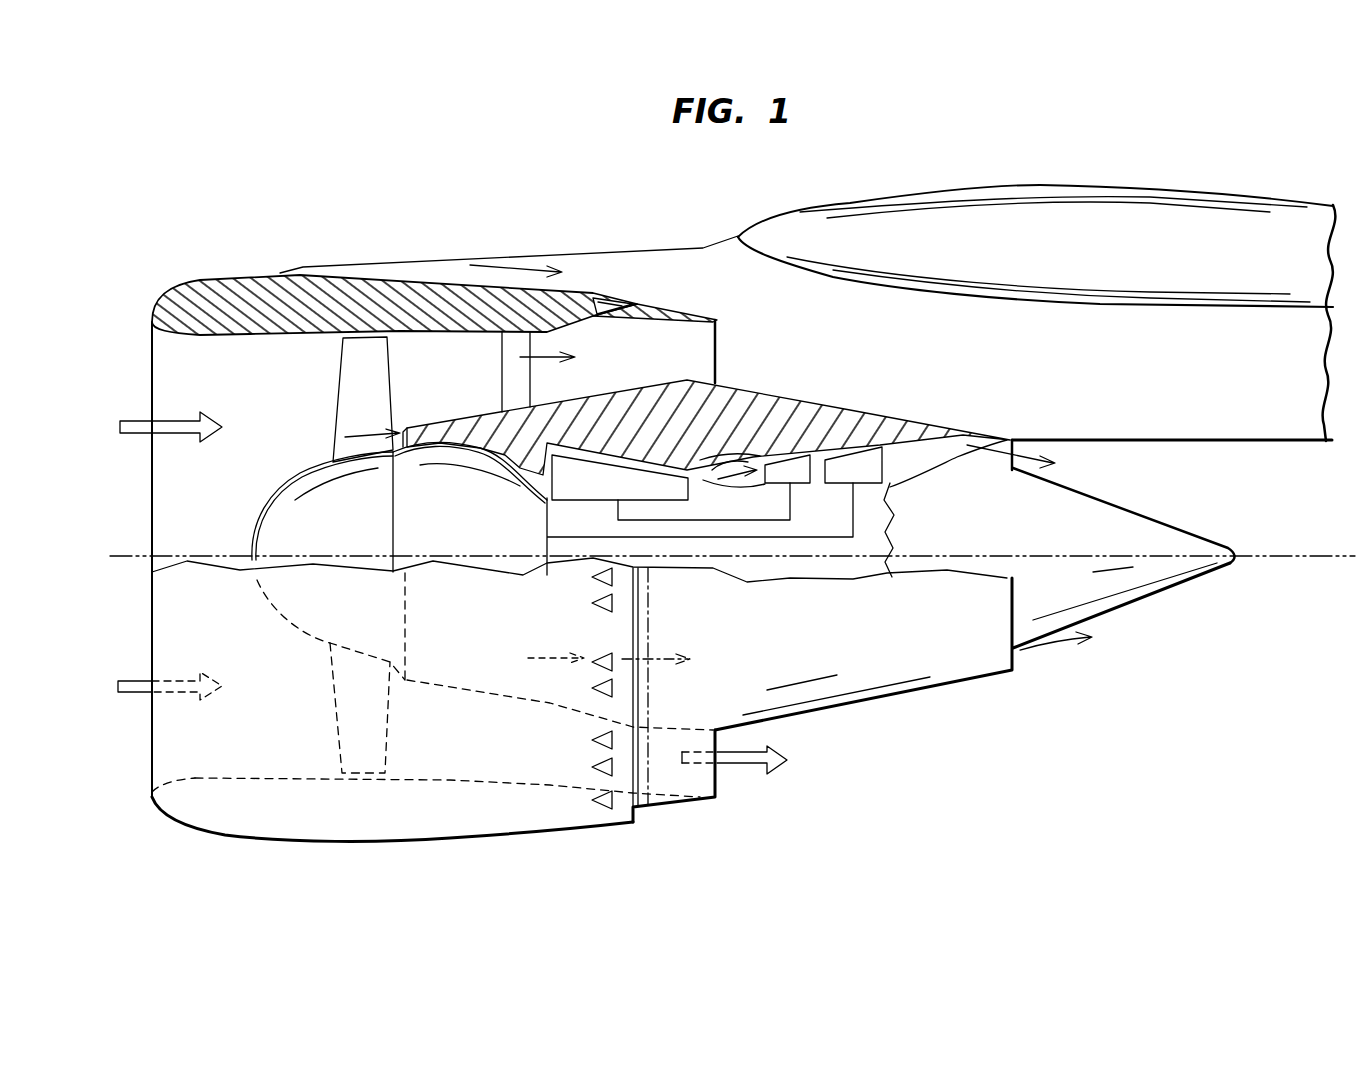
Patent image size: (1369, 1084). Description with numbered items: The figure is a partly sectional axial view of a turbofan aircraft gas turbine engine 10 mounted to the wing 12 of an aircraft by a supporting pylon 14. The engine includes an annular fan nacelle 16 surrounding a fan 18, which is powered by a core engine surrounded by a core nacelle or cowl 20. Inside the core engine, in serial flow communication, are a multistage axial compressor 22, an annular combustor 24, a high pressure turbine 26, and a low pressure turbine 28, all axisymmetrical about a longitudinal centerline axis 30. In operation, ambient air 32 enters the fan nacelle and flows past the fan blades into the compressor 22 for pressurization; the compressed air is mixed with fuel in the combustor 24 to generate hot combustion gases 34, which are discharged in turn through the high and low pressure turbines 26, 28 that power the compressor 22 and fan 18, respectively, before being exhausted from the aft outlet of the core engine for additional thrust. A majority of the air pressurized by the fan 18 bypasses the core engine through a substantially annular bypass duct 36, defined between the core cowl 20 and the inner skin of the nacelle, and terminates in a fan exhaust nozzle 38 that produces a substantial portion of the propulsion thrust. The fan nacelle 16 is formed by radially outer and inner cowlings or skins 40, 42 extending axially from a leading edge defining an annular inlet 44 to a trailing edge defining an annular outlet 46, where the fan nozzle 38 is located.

The turbofan aircraft gas turbine engine 10 is at (253, 235).
The wing 12 is at (878, 203).
The supporting pylon 14 is at (1181, 390).
The fan nacelle 16 is at (207, 832).
The fan 18 is at (338, 395).
The core nacelle or cowl 20 is at (907, 413).
The multistage axial compressor 22 is at (570, 485).
The annular combustor 24 is at (735, 482).
The high pressure turbine 26 is at (822, 487).
The low pressure turbine 28 is at (870, 487).
The longitudinal or axial centerline axis 30 is at (1282, 560).
The ambient air 32 is at (490, 265).
The hot combustion gases 34 is at (1035, 657).
The bypass duct 36 is at (480, 409).
The fan exhaust nozzle 38 is at (620, 262).
The outer cowling or skin 40 is at (362, 270).
The inner cowling or skin 42 is at (467, 332).
The annular inlet 44 is at (150, 378).
The annular outlet 46 is at (716, 343).